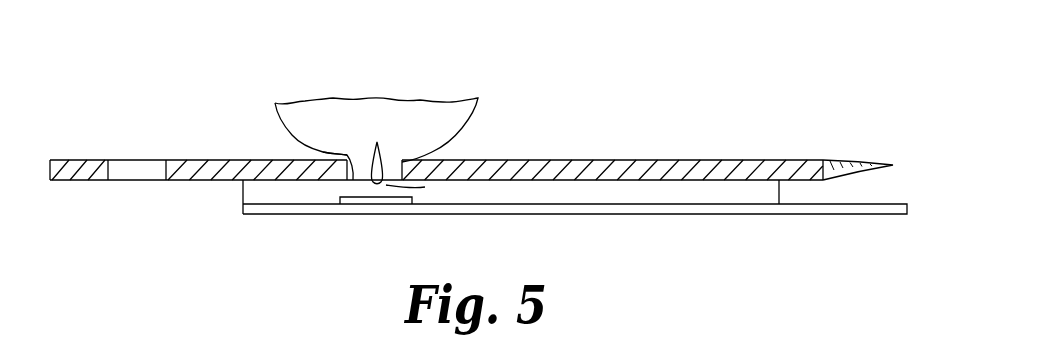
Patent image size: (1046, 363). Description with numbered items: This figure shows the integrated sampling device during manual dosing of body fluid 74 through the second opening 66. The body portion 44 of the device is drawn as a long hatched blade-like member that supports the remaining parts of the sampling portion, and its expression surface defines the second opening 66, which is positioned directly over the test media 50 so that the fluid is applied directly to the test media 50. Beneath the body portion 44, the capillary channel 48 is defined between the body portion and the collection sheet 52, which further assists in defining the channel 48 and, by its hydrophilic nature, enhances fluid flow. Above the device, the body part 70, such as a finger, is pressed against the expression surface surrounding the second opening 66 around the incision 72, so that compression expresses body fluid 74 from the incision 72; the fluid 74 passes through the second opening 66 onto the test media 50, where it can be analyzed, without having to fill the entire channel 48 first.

The body portion 44 is at (700, 160).
The capillary channel 48 is at (247, 188).
The test media 50 is at (378, 204).
The collection sheet 52 is at (263, 210).
The second opening 66 is at (323, 152).
The body part 70 is at (390, 112).
The incision 72 is at (374, 149).
The body fluid 74 is at (386, 185).